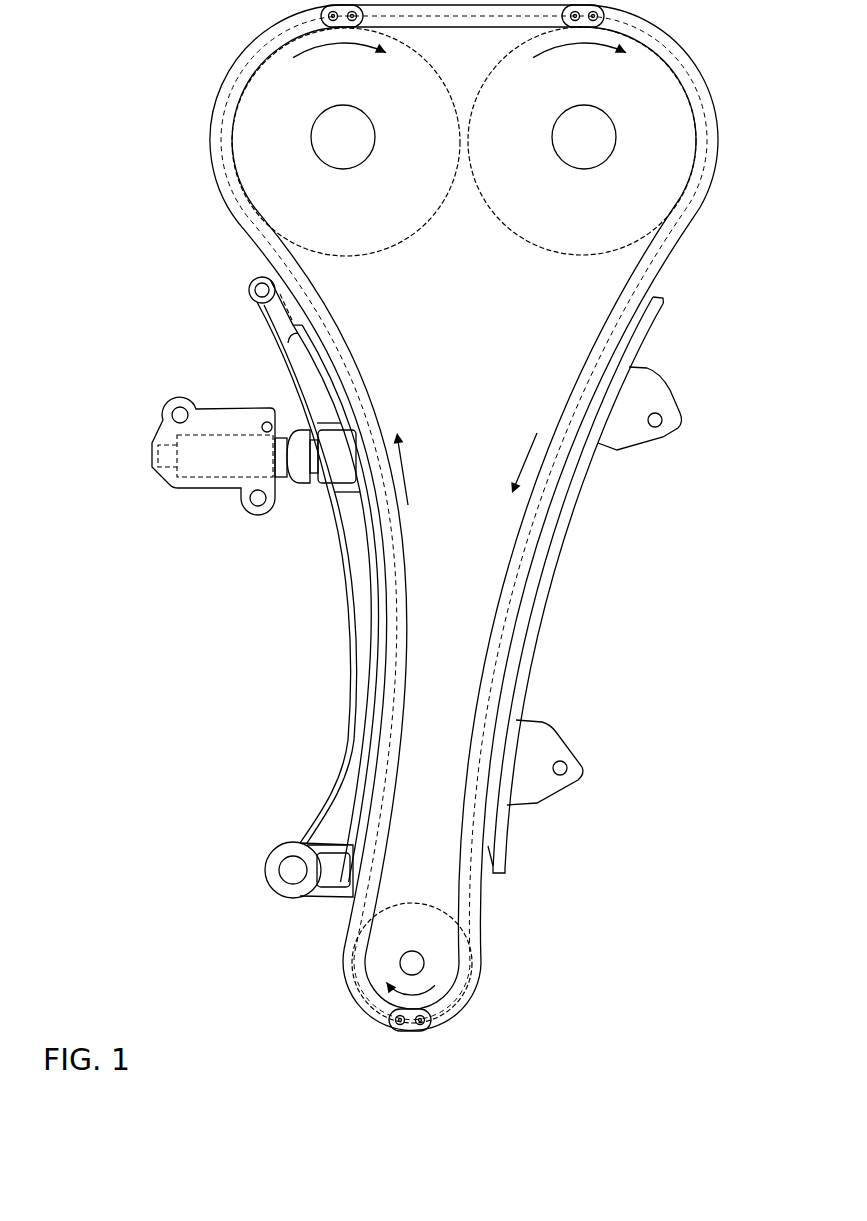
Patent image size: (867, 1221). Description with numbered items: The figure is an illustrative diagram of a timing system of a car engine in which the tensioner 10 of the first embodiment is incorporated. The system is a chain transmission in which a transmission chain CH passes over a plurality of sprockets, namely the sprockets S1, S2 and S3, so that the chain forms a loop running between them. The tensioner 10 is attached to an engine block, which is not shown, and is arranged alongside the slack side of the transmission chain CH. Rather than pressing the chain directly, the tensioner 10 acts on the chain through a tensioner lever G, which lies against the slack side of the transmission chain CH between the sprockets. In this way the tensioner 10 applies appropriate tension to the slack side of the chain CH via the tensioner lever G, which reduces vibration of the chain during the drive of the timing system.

The sprocket S1 is at (442, 961).
The sprocket S2 is at (262, 129).
The sprocket S3 is at (648, 122).
The transmission chain CH is at (655, 257).
The tensioner lever G is at (350, 768).
The tensioner 10 is at (163, 417).